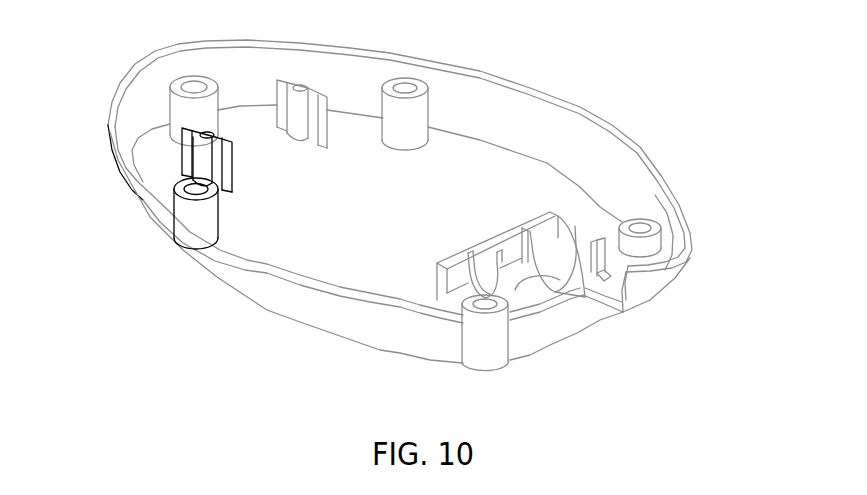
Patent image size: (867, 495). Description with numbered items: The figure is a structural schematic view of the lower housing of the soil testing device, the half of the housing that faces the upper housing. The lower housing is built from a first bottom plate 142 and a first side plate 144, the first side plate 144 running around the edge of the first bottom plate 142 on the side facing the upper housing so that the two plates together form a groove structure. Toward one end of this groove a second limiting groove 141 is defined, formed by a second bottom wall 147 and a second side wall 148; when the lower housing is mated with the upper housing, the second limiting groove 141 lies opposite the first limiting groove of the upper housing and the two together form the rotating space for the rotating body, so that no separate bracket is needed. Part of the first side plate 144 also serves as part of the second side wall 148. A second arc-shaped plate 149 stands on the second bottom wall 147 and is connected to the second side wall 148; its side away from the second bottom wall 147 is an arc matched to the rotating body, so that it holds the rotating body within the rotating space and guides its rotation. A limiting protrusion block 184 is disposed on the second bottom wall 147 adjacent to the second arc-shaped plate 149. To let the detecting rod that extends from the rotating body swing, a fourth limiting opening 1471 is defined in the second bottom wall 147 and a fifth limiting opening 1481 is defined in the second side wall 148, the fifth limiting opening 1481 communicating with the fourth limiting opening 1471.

The first side plate 144 is at (400, 201).
The first bottom plate 142 is at (402, 226).
The second arc-shaped plate 149 is at (656, 185).
The limiting protrusion block 184 is at (659, 212).
The second side wall 148 is at (663, 295).
The second limiting groove 141 is at (468, 302).
The second bottom wall 147 is at (462, 341).
The fourth limiting opening 1471 is at (531, 343).
The fifth limiting opening 1481 is at (600, 350).